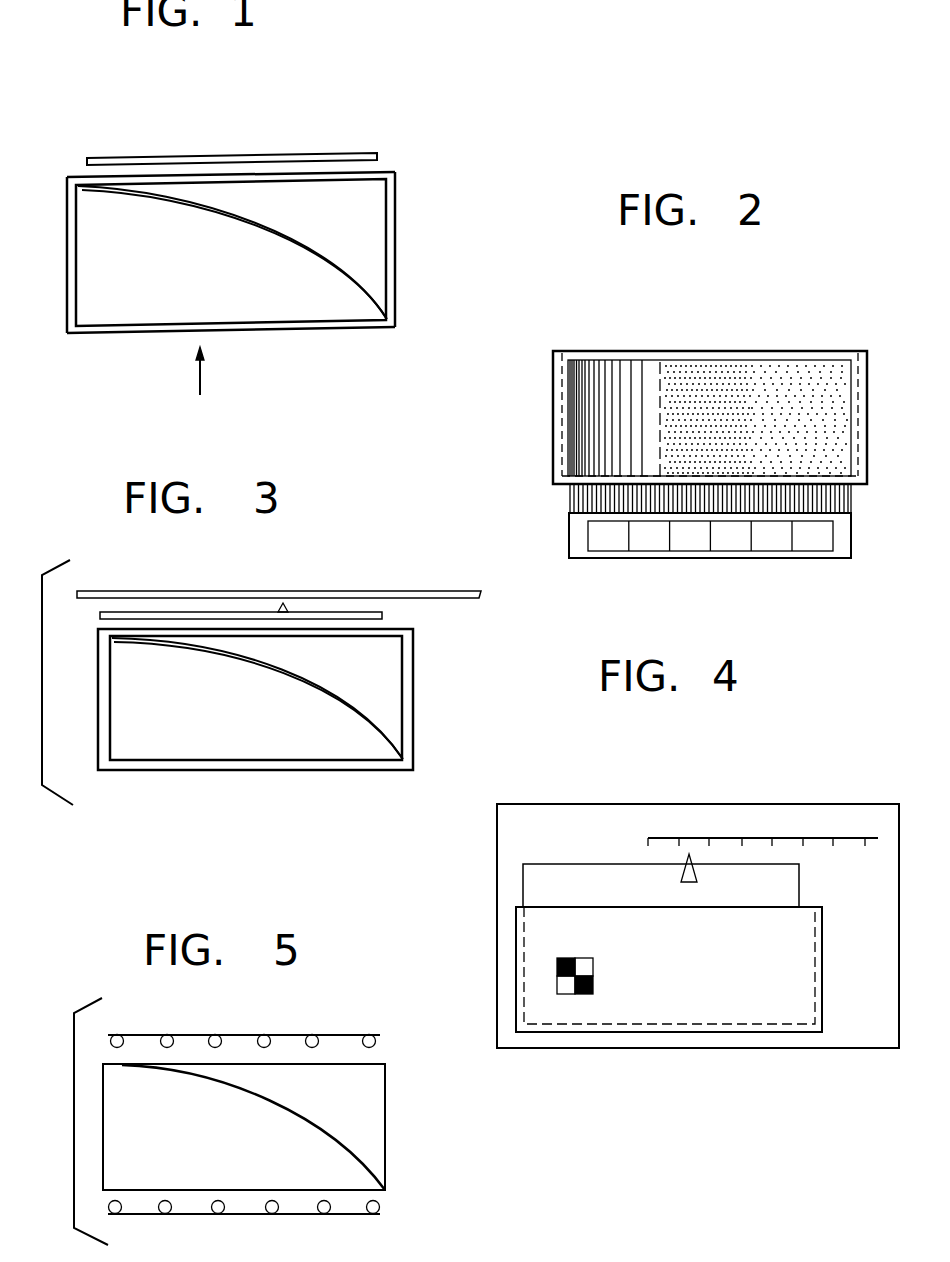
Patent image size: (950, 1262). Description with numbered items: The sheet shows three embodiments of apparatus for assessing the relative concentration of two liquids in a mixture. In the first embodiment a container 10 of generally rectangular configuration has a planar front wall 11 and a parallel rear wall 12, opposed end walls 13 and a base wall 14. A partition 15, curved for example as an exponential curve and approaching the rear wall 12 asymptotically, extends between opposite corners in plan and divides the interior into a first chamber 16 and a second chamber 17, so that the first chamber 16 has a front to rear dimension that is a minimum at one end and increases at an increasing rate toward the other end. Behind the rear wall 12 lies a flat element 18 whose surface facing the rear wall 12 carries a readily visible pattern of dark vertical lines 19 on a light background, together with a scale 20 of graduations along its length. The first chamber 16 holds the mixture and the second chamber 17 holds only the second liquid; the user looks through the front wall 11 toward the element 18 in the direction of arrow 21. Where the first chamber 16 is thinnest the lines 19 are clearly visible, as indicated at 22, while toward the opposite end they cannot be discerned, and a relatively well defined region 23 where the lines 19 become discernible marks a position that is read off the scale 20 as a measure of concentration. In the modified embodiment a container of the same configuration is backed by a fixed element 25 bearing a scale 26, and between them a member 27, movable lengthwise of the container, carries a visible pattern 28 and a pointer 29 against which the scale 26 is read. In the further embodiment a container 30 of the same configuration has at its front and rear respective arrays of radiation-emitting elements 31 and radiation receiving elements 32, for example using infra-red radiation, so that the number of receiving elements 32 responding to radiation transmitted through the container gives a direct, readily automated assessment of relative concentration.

In FIG. 1, the container 10 is at (244, 241).
In FIG. 3, the container 10 is at (413, 727).
In FIG. 1, the front wall 11 is at (362, 333).
In FIG. 1, the rear wall 12 is at (377, 169).
In FIG. 1, the end walls 13 is at (66, 243).
In FIG. 2, the end walls 13 is at (560, 399).
In FIG. 2, the base wall 14 is at (836, 478).
In FIG. 1, the partition 15 is at (229, 216).
In FIG. 1, the first chamber 16 is at (337, 216).
In FIG. 1, the second chamber 17 is at (153, 298).
In FIG. 1, the element 18 is at (240, 153).
In FIG. 2, the element 18 is at (661, 561).
In FIG. 2, the vertical lines 19 is at (593, 500).
In FIG. 2, the scale 20 is at (822, 548).
In FIG. 1, the arrow 21 is at (204, 379).
In FIG. 2, the region of clear visibility 22 is at (612, 372).
In FIG. 2, the region 23 is at (716, 343).
In FIG. 3, the fixed element 25 is at (481, 596).
In FIG. 4, the fixed element 25 is at (860, 972).
In FIG. 4, the scale 26 is at (875, 818).
In FIG. 3, the member 27 is at (100, 614).
In FIG. 4, the member 27 is at (543, 886).
In FIG. 4, the visible pattern 28 is at (557, 973).
In FIG. 4, the pointer 29 is at (689, 882).
In FIG. 5, the container 30 is at (385, 1133).
In FIG. 5, the radiation-emitting elements 31 is at (380, 1209).
In FIG. 5, the radiation receiving elements 32 is at (377, 1043).